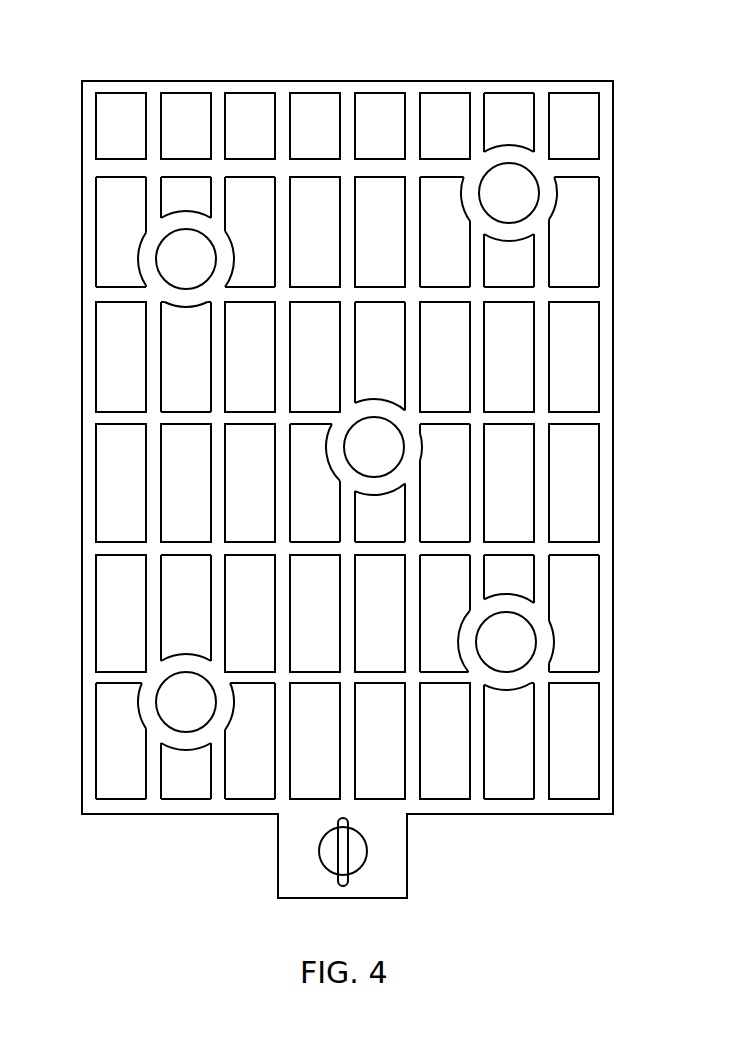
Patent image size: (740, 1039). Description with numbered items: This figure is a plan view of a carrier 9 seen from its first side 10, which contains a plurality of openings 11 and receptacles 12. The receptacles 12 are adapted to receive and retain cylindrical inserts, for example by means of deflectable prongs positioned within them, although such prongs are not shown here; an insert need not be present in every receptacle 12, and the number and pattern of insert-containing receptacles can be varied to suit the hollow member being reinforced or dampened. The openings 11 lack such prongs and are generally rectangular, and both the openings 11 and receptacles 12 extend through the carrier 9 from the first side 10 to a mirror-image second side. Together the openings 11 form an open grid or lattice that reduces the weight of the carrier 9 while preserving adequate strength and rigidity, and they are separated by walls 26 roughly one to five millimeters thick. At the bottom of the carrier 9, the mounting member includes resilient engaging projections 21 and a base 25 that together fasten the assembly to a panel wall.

The carrier 9 is at (558, 58).
The first side 10 is at (118, 86).
The openings 11 is at (572, 322).
The receptacles 12 is at (200, 252).
The resilient engaging projections 21 is at (334, 819).
The base 25 is at (357, 850).
The walls 26 is at (118, 180).